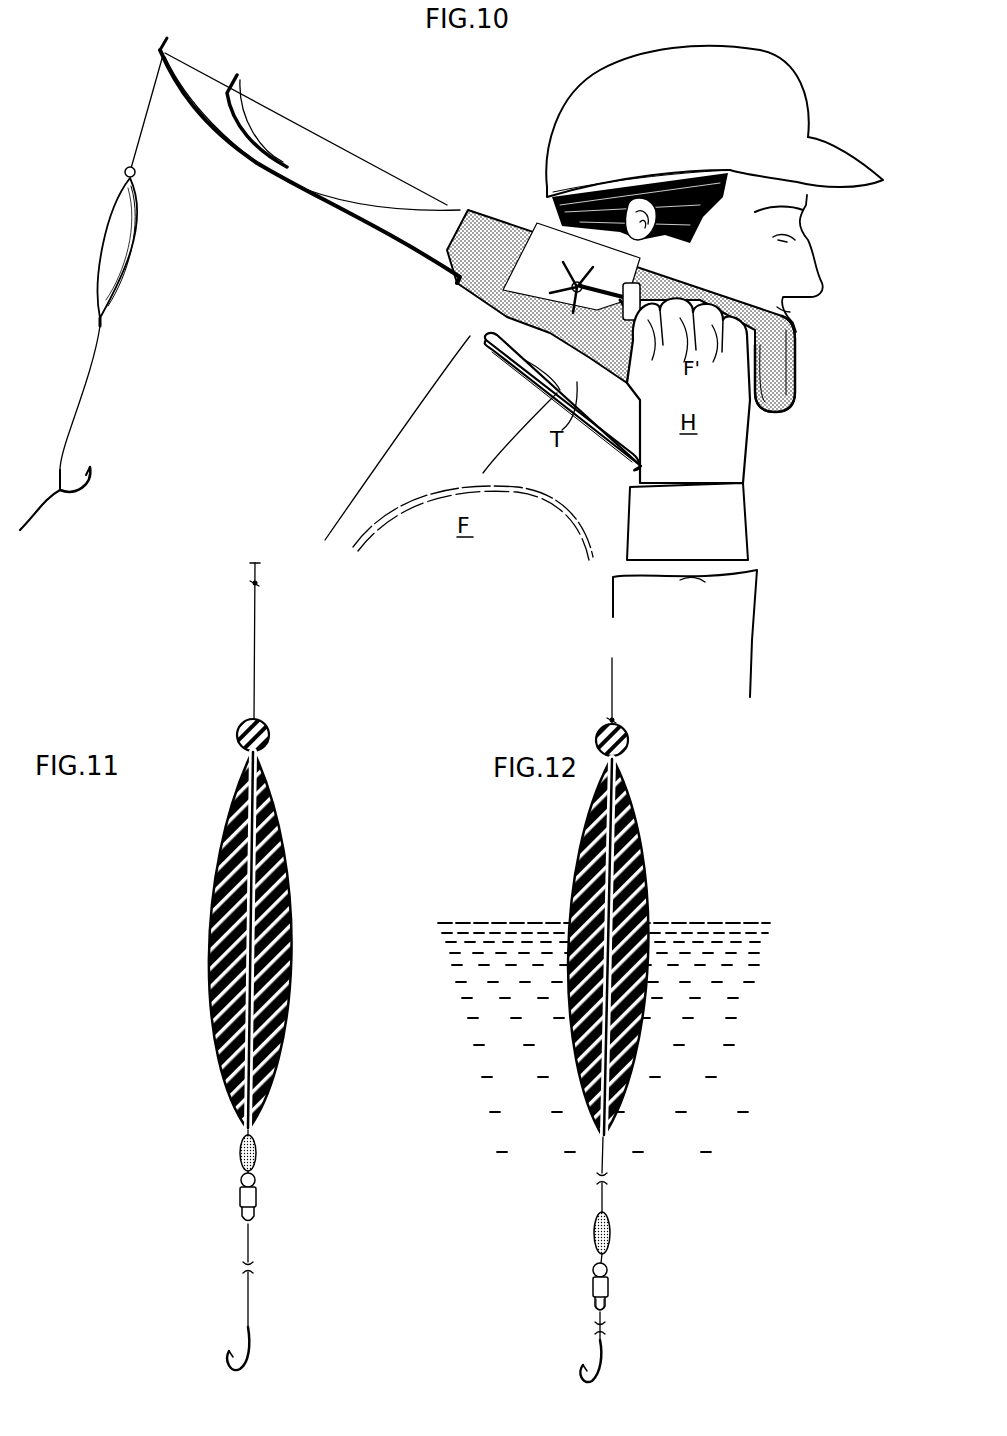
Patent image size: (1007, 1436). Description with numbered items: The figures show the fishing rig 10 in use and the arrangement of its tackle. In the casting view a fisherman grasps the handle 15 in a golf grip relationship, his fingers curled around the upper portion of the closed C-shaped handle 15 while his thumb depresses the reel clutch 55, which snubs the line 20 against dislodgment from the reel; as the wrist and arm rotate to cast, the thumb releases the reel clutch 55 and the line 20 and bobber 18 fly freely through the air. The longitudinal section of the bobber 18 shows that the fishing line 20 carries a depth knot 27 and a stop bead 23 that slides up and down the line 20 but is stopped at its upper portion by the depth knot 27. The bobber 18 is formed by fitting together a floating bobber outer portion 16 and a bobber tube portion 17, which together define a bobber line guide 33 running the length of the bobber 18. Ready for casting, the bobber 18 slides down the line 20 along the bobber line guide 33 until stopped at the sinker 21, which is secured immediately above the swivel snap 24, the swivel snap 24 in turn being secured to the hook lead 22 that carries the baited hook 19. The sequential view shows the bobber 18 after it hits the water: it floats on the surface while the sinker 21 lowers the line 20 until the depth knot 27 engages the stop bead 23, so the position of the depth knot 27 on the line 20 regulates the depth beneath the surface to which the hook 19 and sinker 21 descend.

In FIG. 10, the fishing rig 10 is at (478, 304).
In FIG. 10, the handle 15 is at (797, 389).
In FIG. 11, the floating bobber outer portion 16 is at (236, 942).
In FIG. 12, the floating bobber outer portion 16 is at (595, 948).
In FIG. 11, the bobber tube portion 17 is at (266, 942).
In FIG. 12, the bobber tube portion 17 is at (622, 948).
In FIG. 10, the bobber 18 is at (132, 225).
In FIG. 11, the bobber 18 is at (226, 940).
In FIG. 12, the bobber 18 is at (632, 947).
In FIG. 10, the fishhook 19 is at (58, 488).
In FIG. 11, the fishhook 19 is at (228, 1353).
In FIG. 12, the fishhook 19 is at (587, 1367).
In FIG. 10, the fishing line 20 is at (145, 93).
In FIG. 11, the fishing line 20 is at (253, 567).
In FIG. 11, the sinker 21 is at (257, 1157).
In FIG. 12, the sinker 21 is at (612, 1238).
In FIG. 11, the hook lead 22 is at (250, 1297).
In FIG. 12, the hook lead 22 is at (605, 1333).
In FIG. 11, the stop bead 23 is at (267, 727).
In FIG. 12, the stop bead 23 is at (627, 730).
In FIG. 11, the swivel snap 24 is at (240, 1195).
In FIG. 12, the swivel snap 24 is at (593, 1282).
In FIG. 11, the depth knot 27 is at (257, 585).
In FIG. 12, the depth knot 27 is at (610, 720).
In FIG. 11, the bobber line guide 33 is at (208, 880).
In FIG. 12, the bobber line guide 33 is at (655, 906).
In FIG. 10, the reel clutch 55 is at (575, 352).